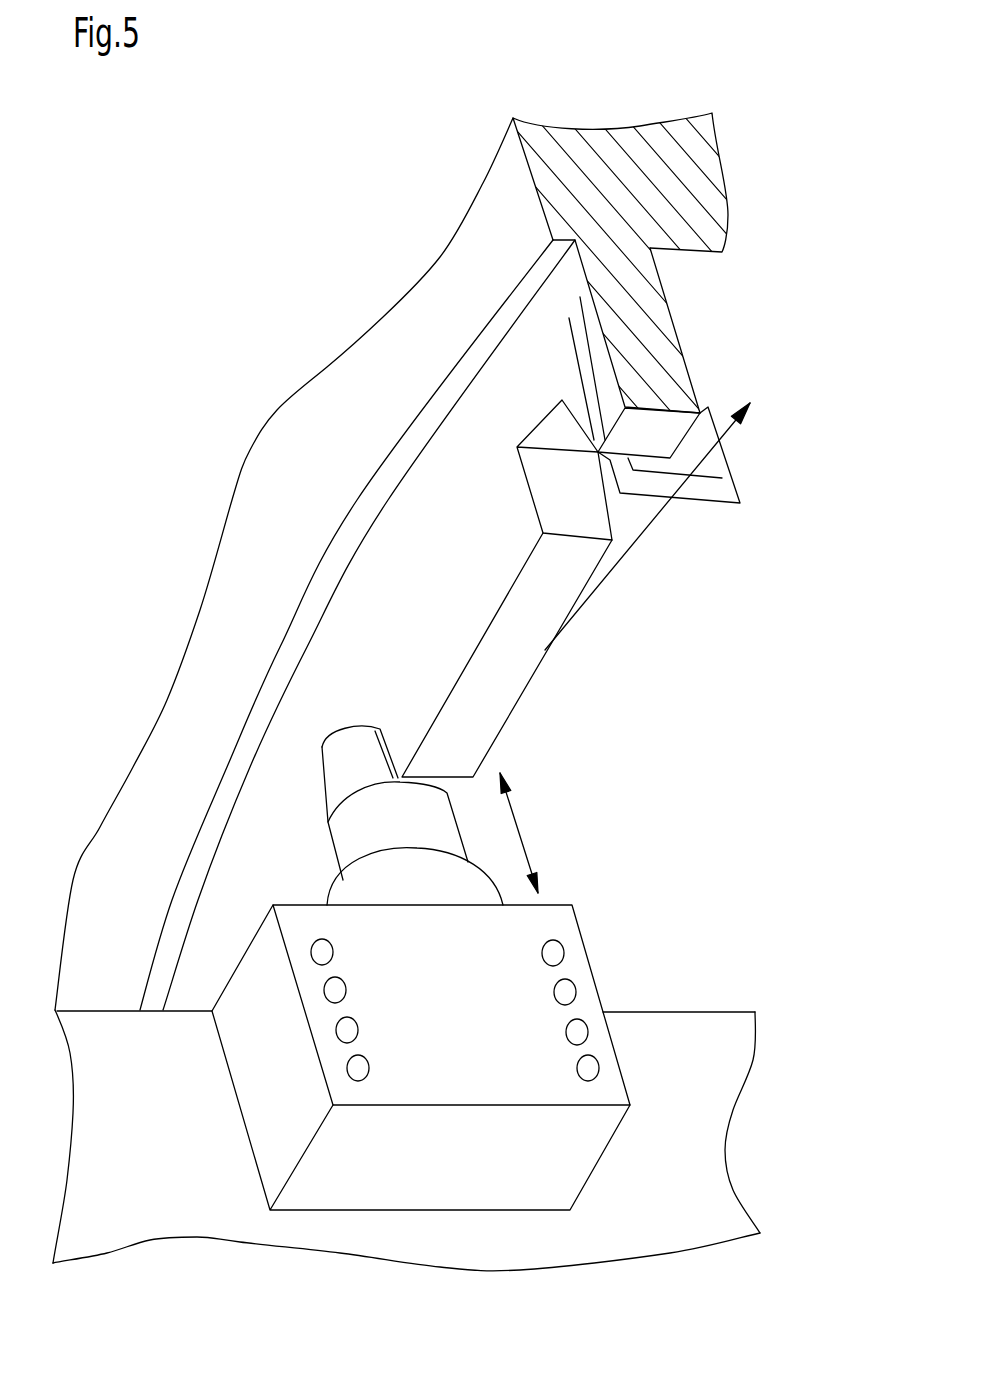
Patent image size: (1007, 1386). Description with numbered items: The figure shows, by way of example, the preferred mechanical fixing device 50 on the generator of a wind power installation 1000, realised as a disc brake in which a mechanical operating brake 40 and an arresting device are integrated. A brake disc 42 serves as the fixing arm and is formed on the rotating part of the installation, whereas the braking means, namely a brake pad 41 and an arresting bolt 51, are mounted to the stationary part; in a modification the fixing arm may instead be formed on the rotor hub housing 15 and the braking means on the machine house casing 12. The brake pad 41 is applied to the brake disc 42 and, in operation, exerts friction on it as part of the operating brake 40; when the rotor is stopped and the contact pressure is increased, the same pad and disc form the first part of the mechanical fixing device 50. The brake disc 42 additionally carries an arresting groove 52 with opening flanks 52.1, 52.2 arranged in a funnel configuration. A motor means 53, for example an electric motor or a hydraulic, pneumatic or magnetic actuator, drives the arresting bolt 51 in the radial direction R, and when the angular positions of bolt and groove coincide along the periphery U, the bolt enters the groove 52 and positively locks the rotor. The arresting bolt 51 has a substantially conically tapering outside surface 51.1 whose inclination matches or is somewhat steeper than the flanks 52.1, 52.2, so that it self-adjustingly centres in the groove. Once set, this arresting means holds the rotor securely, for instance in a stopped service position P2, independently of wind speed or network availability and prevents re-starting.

The wind power installation 1000 is at (457, 102).
The rotor hub housing 15 is at (680, 183).
The mechanical operating brake 40 is at (722, 326).
The brake pad 41 is at (718, 488).
The brake disc 42 is at (435, 537).
The mechanical fixing device 50 is at (290, 533).
The arresting bolt 51 is at (345, 747).
The outside surface 51.1 is at (323, 775).
The arresting groove 52 is at (382, 732).
The opening flank 52.1 is at (545, 498).
The opening flank 52.2 is at (597, 450).
The motor means 53 is at (552, 925).
The machine house casing 12 is at (720, 1073).
The second stopped position P2 is at (213, 449).
The periphery U is at (633, 605).
The radial direction R is at (517, 830).